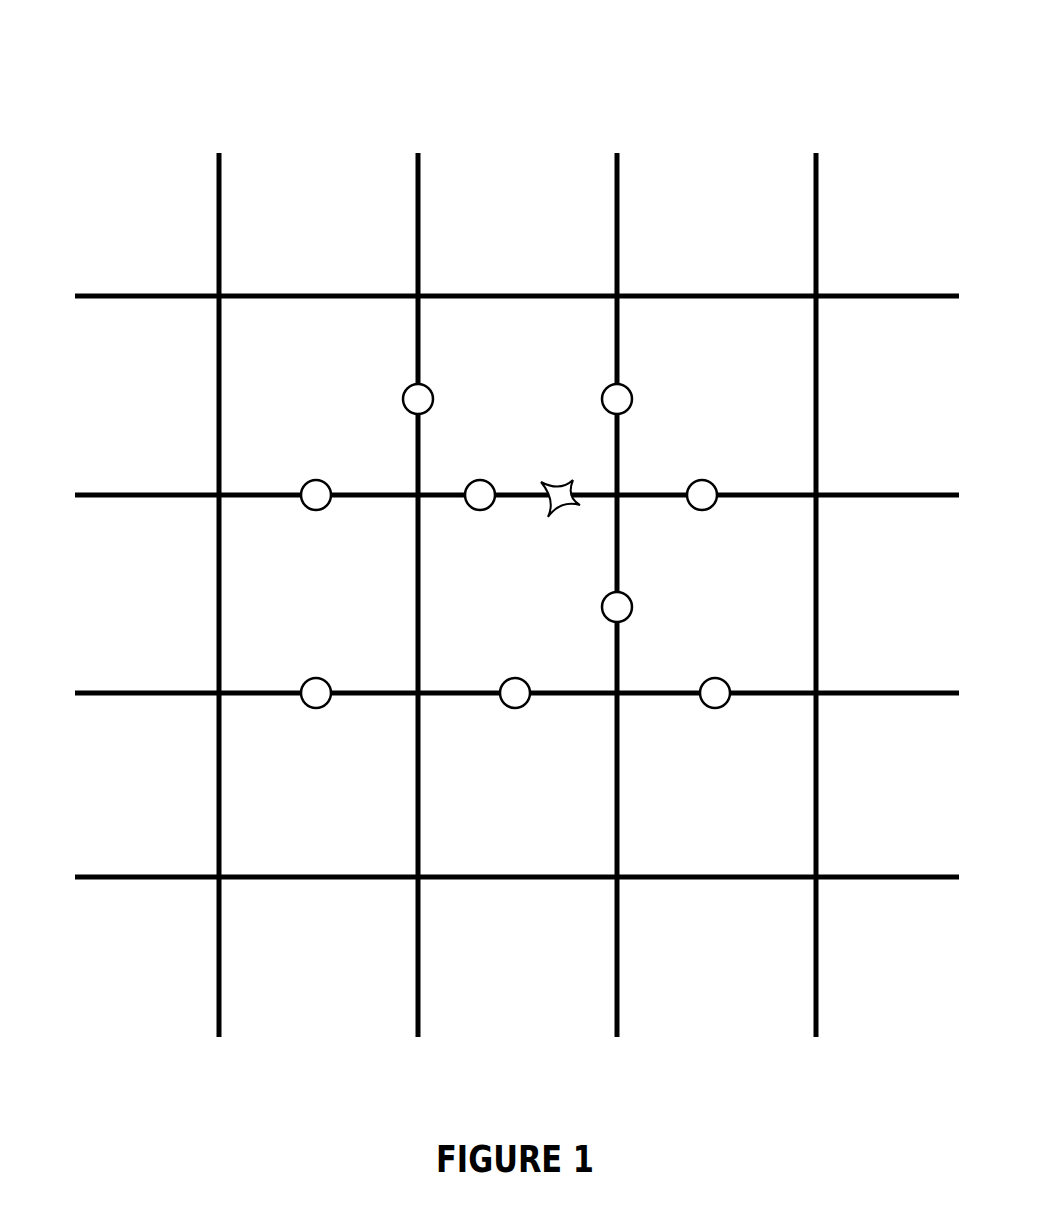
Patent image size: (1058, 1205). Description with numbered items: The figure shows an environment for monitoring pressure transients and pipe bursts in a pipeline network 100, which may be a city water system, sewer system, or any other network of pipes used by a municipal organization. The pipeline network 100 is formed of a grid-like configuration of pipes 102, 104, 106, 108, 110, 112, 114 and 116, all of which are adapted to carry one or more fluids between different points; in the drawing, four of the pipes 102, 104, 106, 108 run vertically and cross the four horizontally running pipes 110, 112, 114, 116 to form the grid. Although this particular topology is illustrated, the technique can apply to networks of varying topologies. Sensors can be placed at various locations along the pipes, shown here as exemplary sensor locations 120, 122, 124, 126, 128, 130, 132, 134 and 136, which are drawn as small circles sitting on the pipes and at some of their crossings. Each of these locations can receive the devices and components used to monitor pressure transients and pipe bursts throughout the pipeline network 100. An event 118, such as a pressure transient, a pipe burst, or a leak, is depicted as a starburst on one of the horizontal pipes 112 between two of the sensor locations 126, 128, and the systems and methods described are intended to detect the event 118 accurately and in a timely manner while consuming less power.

The pipeline network 100 is at (430, 62).
The pipe 102 is at (218, 184).
The pipe 104 is at (417, 184).
The pipe 106 is at (616, 182).
The pipe 108 is at (815, 182).
The pipe 110 is at (104, 298).
The pipe 112 is at (104, 497).
The pipe 114 is at (104, 695).
The pipe 116 is at (104, 879).
The event 118 is at (553, 513).
The sensor location 120 is at (405, 400).
The sensor location 122 is at (631, 404).
The sensor location 124 is at (311, 507).
The sensor location 126 is at (490, 480).
The sensor location 128 is at (700, 510).
The sensor location 130 is at (631, 612).
The sensor location 132 is at (314, 708).
The sensor location 134 is at (513, 708).
The sensor location 136 is at (713, 708).